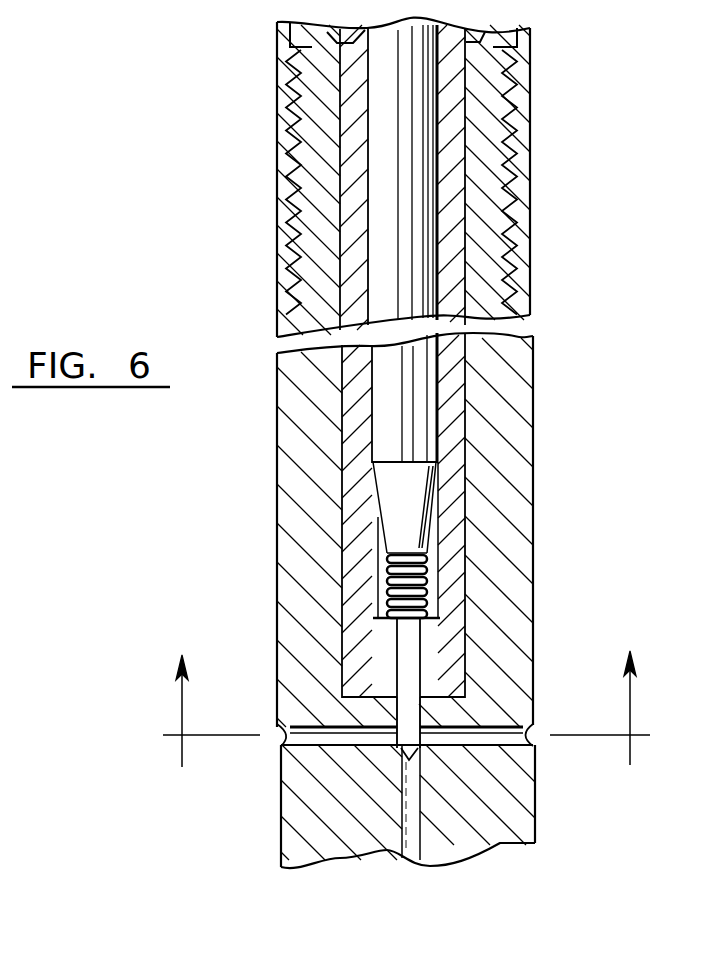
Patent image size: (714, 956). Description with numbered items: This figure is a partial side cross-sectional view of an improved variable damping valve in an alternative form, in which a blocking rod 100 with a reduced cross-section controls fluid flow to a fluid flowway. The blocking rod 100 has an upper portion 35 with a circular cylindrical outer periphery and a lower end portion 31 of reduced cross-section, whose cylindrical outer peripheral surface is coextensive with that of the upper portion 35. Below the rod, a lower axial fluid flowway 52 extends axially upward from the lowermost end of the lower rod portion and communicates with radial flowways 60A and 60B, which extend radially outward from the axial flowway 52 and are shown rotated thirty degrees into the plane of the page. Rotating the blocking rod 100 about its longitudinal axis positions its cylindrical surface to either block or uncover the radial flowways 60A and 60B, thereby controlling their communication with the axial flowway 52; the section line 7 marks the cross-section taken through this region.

The upper portion of the blocking rod 35 is at (413, 681).
The lower end portion 31 is at (534, 775).
The blocking rod 100 is at (405, 721).
The radial flowway 60A is at (533, 738).
The radial flowway 60B is at (286, 736).
The lower axial fluid flowway 52 is at (413, 848).
The section line 7- 7 is at (405, 712).